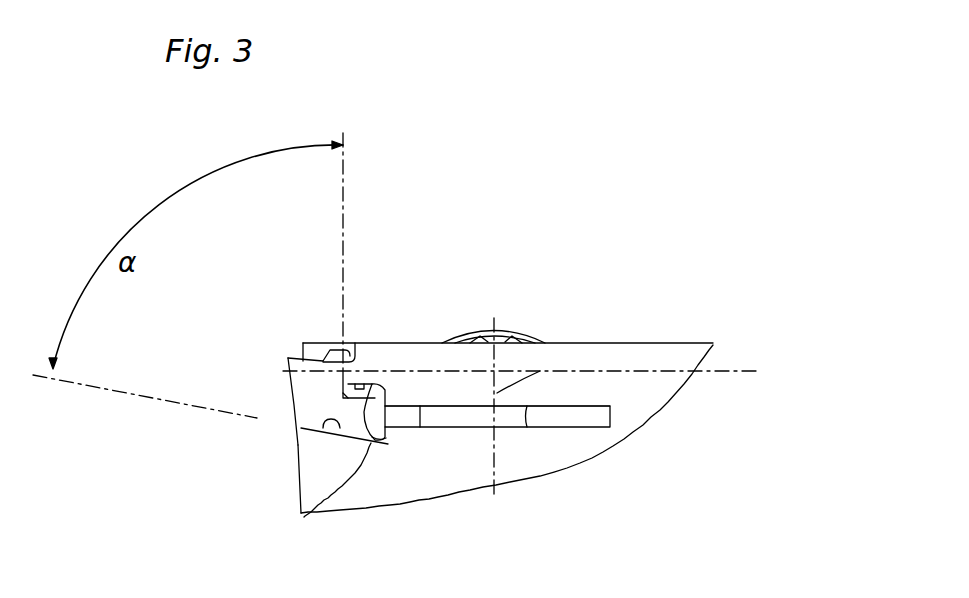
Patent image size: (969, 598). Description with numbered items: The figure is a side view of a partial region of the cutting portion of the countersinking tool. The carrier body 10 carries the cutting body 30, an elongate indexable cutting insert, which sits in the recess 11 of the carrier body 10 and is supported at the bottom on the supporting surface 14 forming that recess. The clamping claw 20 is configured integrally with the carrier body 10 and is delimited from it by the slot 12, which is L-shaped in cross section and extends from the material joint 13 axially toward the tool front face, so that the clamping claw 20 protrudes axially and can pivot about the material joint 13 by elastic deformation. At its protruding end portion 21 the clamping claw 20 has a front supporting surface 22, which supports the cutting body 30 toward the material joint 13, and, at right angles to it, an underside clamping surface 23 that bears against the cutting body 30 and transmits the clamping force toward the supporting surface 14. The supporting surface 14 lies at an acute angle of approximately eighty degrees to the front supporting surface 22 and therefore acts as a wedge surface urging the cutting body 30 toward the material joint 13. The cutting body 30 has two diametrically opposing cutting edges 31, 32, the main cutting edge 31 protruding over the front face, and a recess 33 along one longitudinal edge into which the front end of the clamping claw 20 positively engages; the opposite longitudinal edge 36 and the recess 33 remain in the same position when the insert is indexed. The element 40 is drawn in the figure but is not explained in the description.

The carrier body 10 is at (360, 497).
The recess 11 is at (371, 430).
The slot 12 is at (572, 418).
The material joint 13 is at (640, 387).
The supporting surface 14 is at (298, 485).
The clamping claw 20 is at (583, 360).
The protruding end portion 21 is at (427, 380).
The front supporting surface 22 is at (358, 343).
The clamping surface 23 is at (372, 381).
The cutting body 30 is at (296, 383).
The main cutting edge 31 is at (283, 357).
The cutting edge 32 is at (323, 430).
The recess 33 is at (343, 393).
The longitudinal edge 36 is at (298, 442).
The adjusting element 40 is at (512, 331).